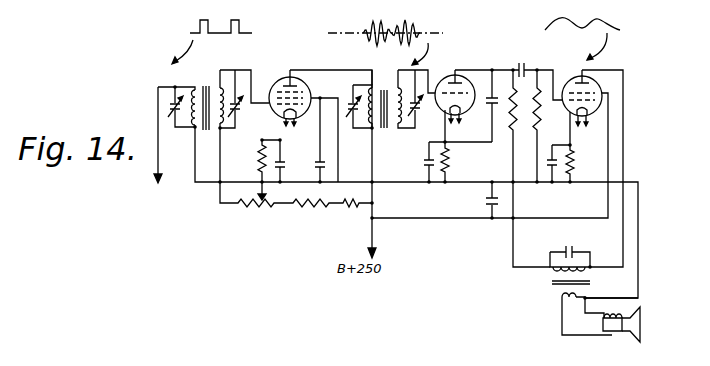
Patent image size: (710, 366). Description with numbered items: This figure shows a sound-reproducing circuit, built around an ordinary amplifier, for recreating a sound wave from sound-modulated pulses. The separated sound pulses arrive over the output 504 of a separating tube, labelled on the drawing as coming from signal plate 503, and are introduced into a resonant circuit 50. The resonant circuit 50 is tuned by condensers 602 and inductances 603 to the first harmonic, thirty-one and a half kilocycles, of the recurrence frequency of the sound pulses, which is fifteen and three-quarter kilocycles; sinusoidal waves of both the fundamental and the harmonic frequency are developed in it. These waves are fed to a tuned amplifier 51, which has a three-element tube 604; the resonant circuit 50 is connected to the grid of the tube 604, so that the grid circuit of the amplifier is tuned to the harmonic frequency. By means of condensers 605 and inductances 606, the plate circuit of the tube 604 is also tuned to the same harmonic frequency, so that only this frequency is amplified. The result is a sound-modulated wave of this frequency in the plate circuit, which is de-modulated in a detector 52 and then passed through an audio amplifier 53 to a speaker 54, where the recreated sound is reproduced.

The resonant circuit 50 is at (220, 91).
The tuned amplifier 51 is at (379, 87).
The detector 52 is at (449, 73).
The audio amplifier 53 is at (577, 96).
The speaker 54 is at (641, 321).
The signal plate 503 is at (161, 215).
The output of the separating tube 504 is at (155, 161).
The condensers 602 is at (168, 107).
The inductances 603 is at (199, 131).
The three-element tube 604 is at (288, 77).
The condensers 605 is at (349, 104).
The inductances 606 is at (383, 130).